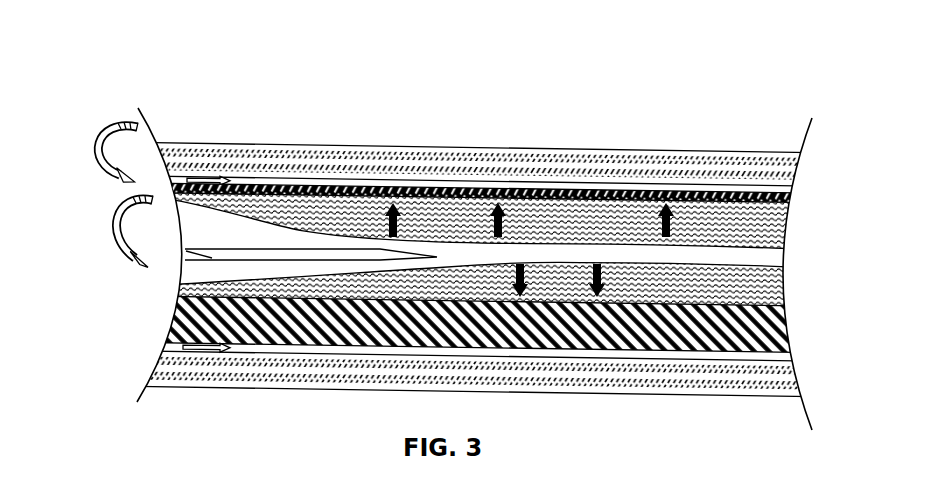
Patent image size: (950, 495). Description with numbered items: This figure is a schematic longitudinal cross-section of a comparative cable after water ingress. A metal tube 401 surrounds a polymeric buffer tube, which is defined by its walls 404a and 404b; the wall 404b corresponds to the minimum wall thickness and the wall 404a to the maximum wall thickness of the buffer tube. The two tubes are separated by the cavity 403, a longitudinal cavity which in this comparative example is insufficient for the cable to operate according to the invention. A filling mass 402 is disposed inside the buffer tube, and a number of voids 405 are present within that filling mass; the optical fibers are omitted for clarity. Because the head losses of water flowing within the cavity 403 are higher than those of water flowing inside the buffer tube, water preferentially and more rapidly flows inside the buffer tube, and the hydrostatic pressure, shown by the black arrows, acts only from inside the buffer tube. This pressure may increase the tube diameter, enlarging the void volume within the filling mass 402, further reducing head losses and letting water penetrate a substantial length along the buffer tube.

The metal tube 401 is at (199, 150).
The filling mass 402 is at (467, 196).
The cavity 403 is at (293, 183).
The buffer tube wall 404a is at (227, 306).
The buffer tube wall 404b is at (675, 191).
The voids 405 is at (210, 264).